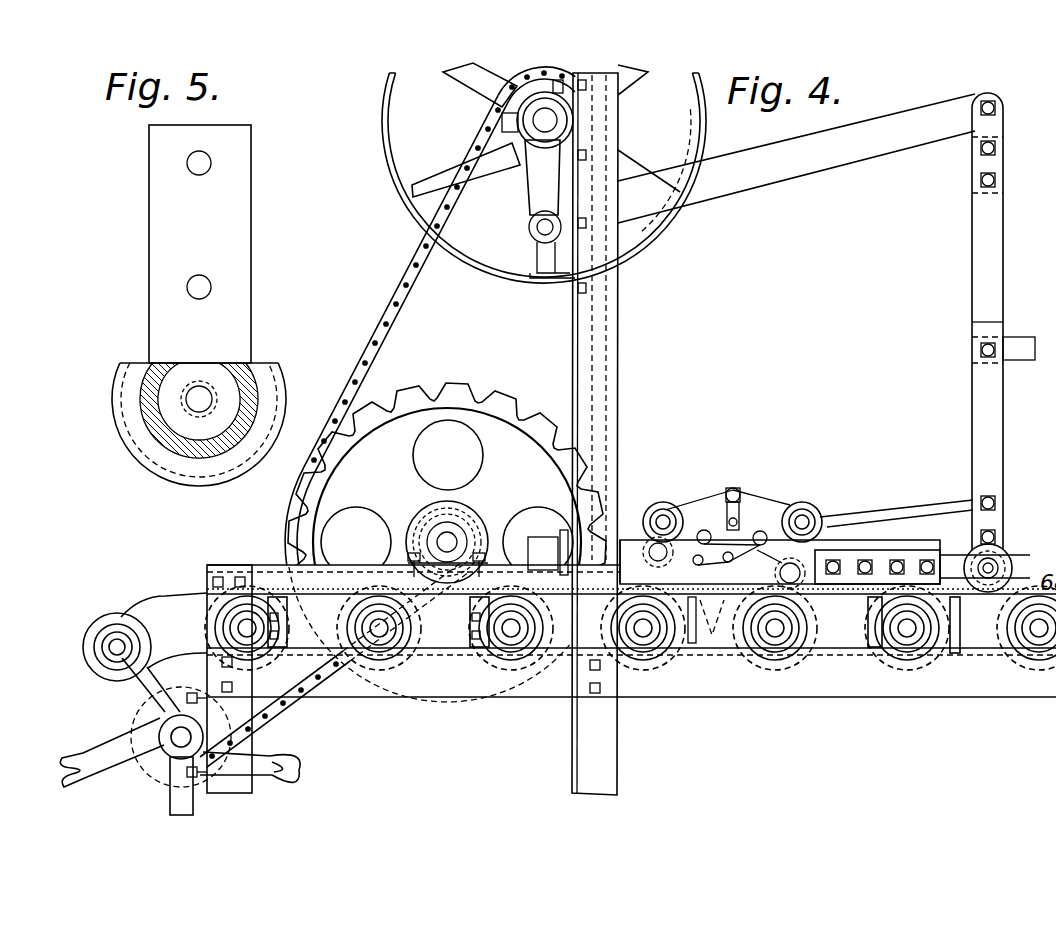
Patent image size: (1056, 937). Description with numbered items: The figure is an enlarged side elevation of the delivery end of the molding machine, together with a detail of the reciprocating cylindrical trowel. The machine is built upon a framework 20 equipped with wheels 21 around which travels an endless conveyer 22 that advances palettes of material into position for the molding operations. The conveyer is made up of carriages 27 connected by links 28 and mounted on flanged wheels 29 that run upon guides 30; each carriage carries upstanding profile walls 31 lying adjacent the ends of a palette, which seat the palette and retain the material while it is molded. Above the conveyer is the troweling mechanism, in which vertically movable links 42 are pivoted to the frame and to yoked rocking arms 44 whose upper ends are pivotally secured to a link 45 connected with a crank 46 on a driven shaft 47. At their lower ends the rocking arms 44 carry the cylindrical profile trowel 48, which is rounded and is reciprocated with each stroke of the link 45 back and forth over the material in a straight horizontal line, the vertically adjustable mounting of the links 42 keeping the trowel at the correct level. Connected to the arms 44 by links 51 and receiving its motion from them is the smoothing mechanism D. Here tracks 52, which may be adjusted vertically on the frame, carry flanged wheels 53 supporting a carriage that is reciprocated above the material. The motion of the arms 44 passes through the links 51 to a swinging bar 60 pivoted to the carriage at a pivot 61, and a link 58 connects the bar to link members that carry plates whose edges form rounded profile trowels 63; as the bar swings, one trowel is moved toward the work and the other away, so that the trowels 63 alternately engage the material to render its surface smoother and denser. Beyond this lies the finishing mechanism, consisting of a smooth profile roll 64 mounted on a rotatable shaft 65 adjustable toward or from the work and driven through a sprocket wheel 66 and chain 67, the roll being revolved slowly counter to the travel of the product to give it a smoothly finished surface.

In FIG. 4, the framework 20 is at (595, 434).
In FIG. 4, the wheels 21 is at (266, 757).
In FIG. 4, the endless conveyer 22 is at (850, 640).
In FIG. 4, the carriages 27 is at (982, 634).
In FIG. 4, the links 28 is at (877, 597).
In FIG. 4, the flanged wheels 29 is at (670, 640).
In FIG. 4, the guides 30 is at (775, 639).
In FIG. 4, the profile walls 31 is at (707, 621).
In FIG. 4, the links 42 is at (1016, 344).
In FIG. 5, the rocking arms 44 is at (200, 244).
In FIG. 4, the rocking arms 44 is at (972, 418).
In FIG. 4, the link 45 is at (825, 156).
In FIG. 4, the crank 46 is at (528, 196).
In FIG. 4, the driven shaft 47 is at (553, 121).
In FIG. 5, the cylindrical profile trowel 48 is at (209, 476).
In FIG. 4, the cylindrical profile trowel 48 is at (1001, 560).
In FIG. 4, the links 51 is at (863, 510).
In FIG. 4, the tracks 52 is at (628, 540).
In FIG. 4, the flanged wheels 53 is at (660, 500).
In FIG. 4, the link 58 is at (737, 557).
In FIG. 4, the swinging bar 60 is at (727, 501).
In FIG. 4, the pivot 61 is at (734, 488).
In FIG. 4, the profile trowel 63 is at (735, 536).
In FIG. 4, the smooth profile roll 64 is at (478, 527).
In FIG. 4, the rotatable shaft 65 is at (445, 540).
In FIG. 4, the sprocket wheel 66 is at (447, 542).
In FIG. 4, the chain 67 is at (373, 333).
In FIG. 4, the smoothing mechanism D is at (767, 482).